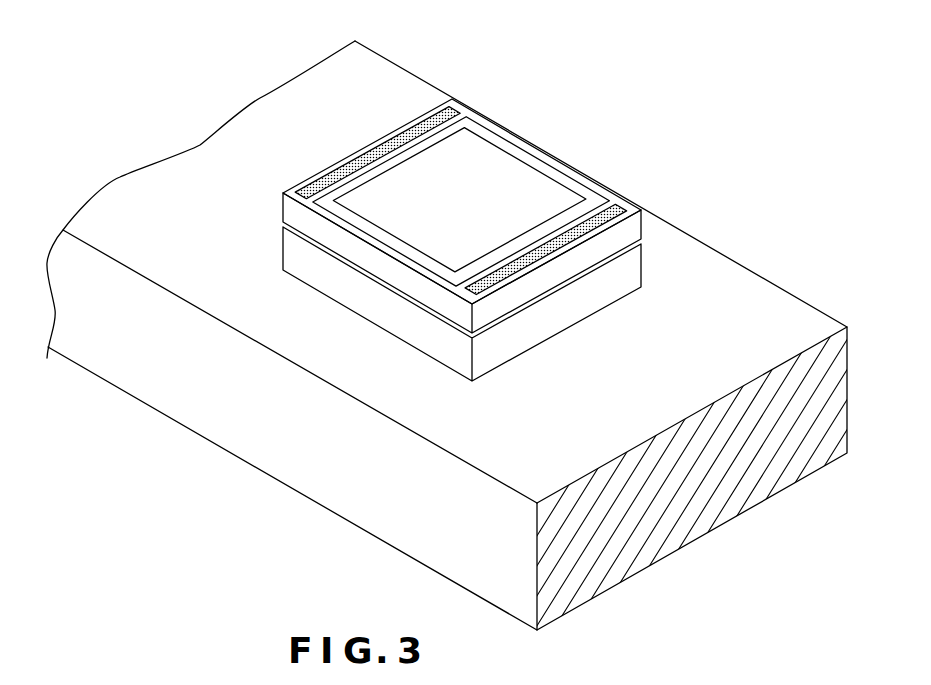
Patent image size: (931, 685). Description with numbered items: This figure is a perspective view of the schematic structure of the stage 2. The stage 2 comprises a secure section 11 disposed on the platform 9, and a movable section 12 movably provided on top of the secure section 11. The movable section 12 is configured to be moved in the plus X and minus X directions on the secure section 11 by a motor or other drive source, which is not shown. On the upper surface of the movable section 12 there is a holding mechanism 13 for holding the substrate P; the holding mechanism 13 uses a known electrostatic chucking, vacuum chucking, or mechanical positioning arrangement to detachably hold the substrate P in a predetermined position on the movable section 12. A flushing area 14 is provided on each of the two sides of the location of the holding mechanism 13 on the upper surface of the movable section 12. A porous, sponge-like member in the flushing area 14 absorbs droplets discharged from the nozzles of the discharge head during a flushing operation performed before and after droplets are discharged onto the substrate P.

The stage 2 is at (487, 113).
The platform 9 is at (722, 283).
The secure section 11 is at (283, 257).
The movable section 12 is at (283, 208).
The holding mechanism 13 is at (433, 265).
The flushing area 14 is at (413, 122).
The substrate P is at (503, 160).